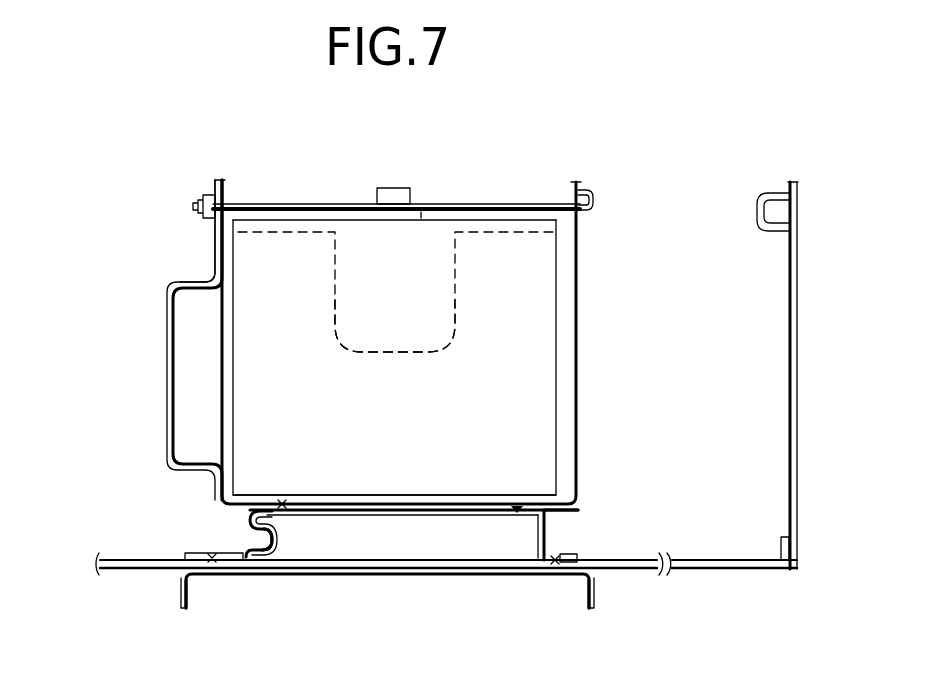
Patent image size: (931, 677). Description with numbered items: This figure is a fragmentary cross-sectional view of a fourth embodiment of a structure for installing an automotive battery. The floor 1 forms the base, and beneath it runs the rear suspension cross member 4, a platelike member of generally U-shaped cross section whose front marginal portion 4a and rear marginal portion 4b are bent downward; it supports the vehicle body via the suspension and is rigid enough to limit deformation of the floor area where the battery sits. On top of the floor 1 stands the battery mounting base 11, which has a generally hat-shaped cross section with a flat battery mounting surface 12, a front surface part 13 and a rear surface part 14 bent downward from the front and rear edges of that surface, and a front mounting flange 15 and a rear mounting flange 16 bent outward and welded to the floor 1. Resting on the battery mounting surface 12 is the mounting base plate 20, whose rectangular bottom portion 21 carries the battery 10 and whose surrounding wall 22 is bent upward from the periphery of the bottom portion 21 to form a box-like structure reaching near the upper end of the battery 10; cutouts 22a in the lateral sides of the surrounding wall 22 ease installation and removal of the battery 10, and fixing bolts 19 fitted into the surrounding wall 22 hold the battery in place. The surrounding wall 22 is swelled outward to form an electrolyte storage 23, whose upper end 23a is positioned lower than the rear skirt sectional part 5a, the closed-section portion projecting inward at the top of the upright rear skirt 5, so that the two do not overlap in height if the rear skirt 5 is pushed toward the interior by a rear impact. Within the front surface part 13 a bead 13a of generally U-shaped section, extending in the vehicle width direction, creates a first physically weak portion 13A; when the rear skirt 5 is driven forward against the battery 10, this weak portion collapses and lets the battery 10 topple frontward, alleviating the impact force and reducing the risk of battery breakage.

The floor 1 is at (736, 558).
The rear suspension cross member 4 is at (394, 614).
The front marginal portion 4a is at (182, 606).
The rear marginal portion 4b is at (596, 594).
The rear skirt 5 is at (776, 358).
The rear skirt sectional part 5a is at (760, 200).
The battery 10 is at (430, 230).
The battery mounting base 11 is at (345, 539).
The battery mounting surface 12 is at (477, 514).
The front surface part 13 is at (168, 517).
The bead 13a is at (255, 537).
The first physically weak portion 13A is at (200, 543).
The rear surface part 14 is at (548, 518).
The front mounting flange 15 is at (238, 561).
The rear mounting flange 16 is at (566, 563).
The fixing bolts 19 is at (320, 202).
The mounting base plate 20 is at (440, 314).
The bottom portion 21 is at (405, 498).
The surrounding wall 22 is at (580, 330).
The cutouts 22a is at (457, 336).
The electrolyte storage 23 is at (153, 340).
The upper end 23a is at (177, 280).